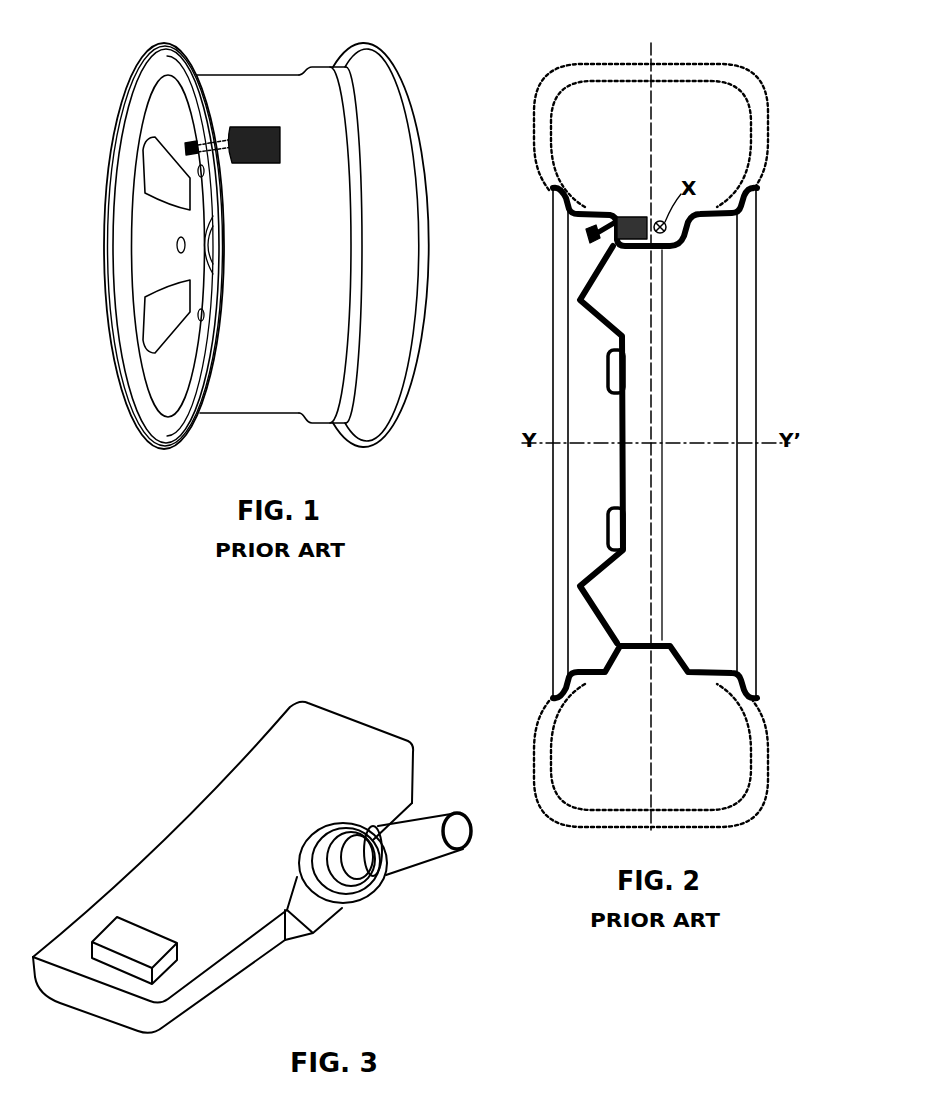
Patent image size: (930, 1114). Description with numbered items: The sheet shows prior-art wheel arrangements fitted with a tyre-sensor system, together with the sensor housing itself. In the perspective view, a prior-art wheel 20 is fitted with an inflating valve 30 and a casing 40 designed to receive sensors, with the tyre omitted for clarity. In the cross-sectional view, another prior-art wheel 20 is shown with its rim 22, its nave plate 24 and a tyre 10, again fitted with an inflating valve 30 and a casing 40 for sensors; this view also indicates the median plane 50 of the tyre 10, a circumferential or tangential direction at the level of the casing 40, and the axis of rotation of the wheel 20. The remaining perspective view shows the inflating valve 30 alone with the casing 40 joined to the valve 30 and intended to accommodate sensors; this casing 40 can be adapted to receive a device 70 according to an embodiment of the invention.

In FIG. 2, the tyre 10 is at (578, 88).
In FIG. 1, the wheel 20 is at (143, 83).
In FIG. 2, the wheel 20 is at (604, 400).
In FIG. 2, the rim 22 is at (550, 190).
In FIG. 2, the nave plate 24 is at (618, 390).
In FIG. 1, the inflating valve 30 is at (200, 140).
In FIG. 2, the inflating valve 30 is at (615, 216).
In FIG. 3, the inflating valve 30 is at (425, 843).
In FIG. 1, the casing 40 is at (270, 128).
In FIG. 2, the casing 40 is at (642, 218).
In FIG. 3, the casing 40 is at (197, 840).
In FIG. 2, the median plane 50 is at (651, 424).
In FIG. 3, the device 70 is at (137, 940).